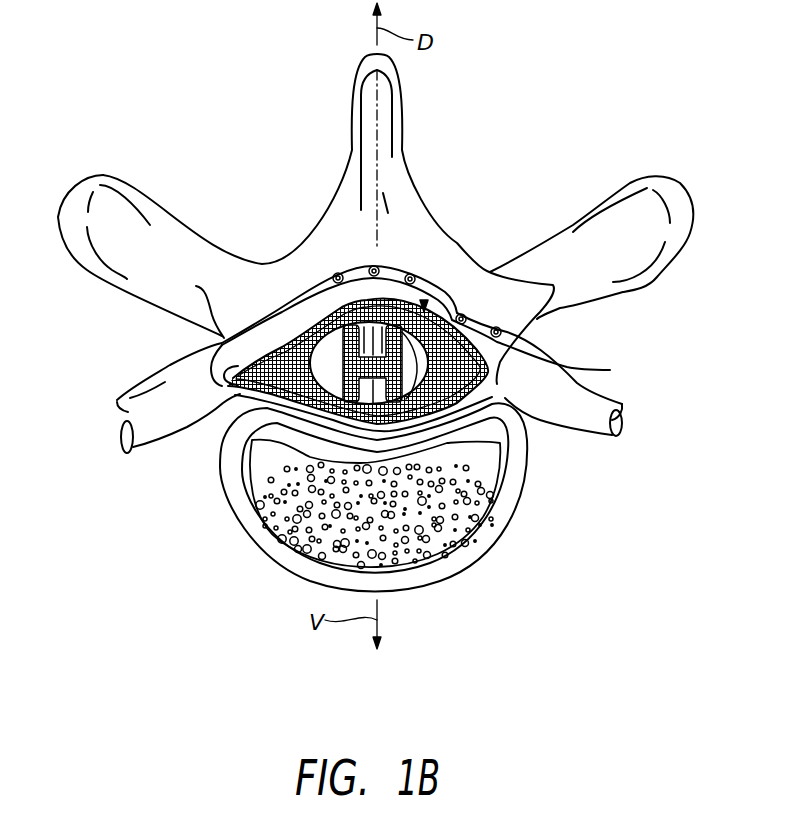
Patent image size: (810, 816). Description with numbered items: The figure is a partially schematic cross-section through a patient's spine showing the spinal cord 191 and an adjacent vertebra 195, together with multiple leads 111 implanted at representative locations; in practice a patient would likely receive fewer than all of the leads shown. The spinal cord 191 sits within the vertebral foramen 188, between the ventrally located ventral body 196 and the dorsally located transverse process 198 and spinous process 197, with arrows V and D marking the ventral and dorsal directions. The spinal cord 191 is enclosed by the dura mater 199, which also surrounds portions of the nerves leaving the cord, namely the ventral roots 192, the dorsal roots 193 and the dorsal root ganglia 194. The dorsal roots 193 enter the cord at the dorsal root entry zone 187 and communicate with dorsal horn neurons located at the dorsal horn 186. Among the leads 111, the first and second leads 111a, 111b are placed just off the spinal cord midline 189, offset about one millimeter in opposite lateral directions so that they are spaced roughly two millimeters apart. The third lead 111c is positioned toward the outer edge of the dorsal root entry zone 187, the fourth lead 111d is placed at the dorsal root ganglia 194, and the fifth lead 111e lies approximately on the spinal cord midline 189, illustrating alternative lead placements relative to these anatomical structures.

The leads 111 is at (451, 190).
The first lead 111a is at (338, 273).
The second lead 111b is at (424, 300).
The third lead 111c is at (463, 314).
The fourth lead 111d is at (501, 336).
The fifth lead 111e is at (410, 274).
The dorsal horn 186 is at (413, 413).
The dorsal root entry zone 187 is at (453, 310).
The vertebral foramen 188 is at (290, 413).
The spinal cord midline 189 is at (377, 133).
The spinal cord 191 is at (330, 352).
The ventral roots 192 is at (480, 517).
The dorsal roots 193 is at (435, 361).
The dorsal root ganglia 194 is at (493, 375).
The vertebra 195 is at (191, 325).
The ventral body 196 is at (390, 402).
The spinous process 197 is at (393, 93).
The transverse process 198 is at (103, 175).
The dura mater 199 is at (191, 397).